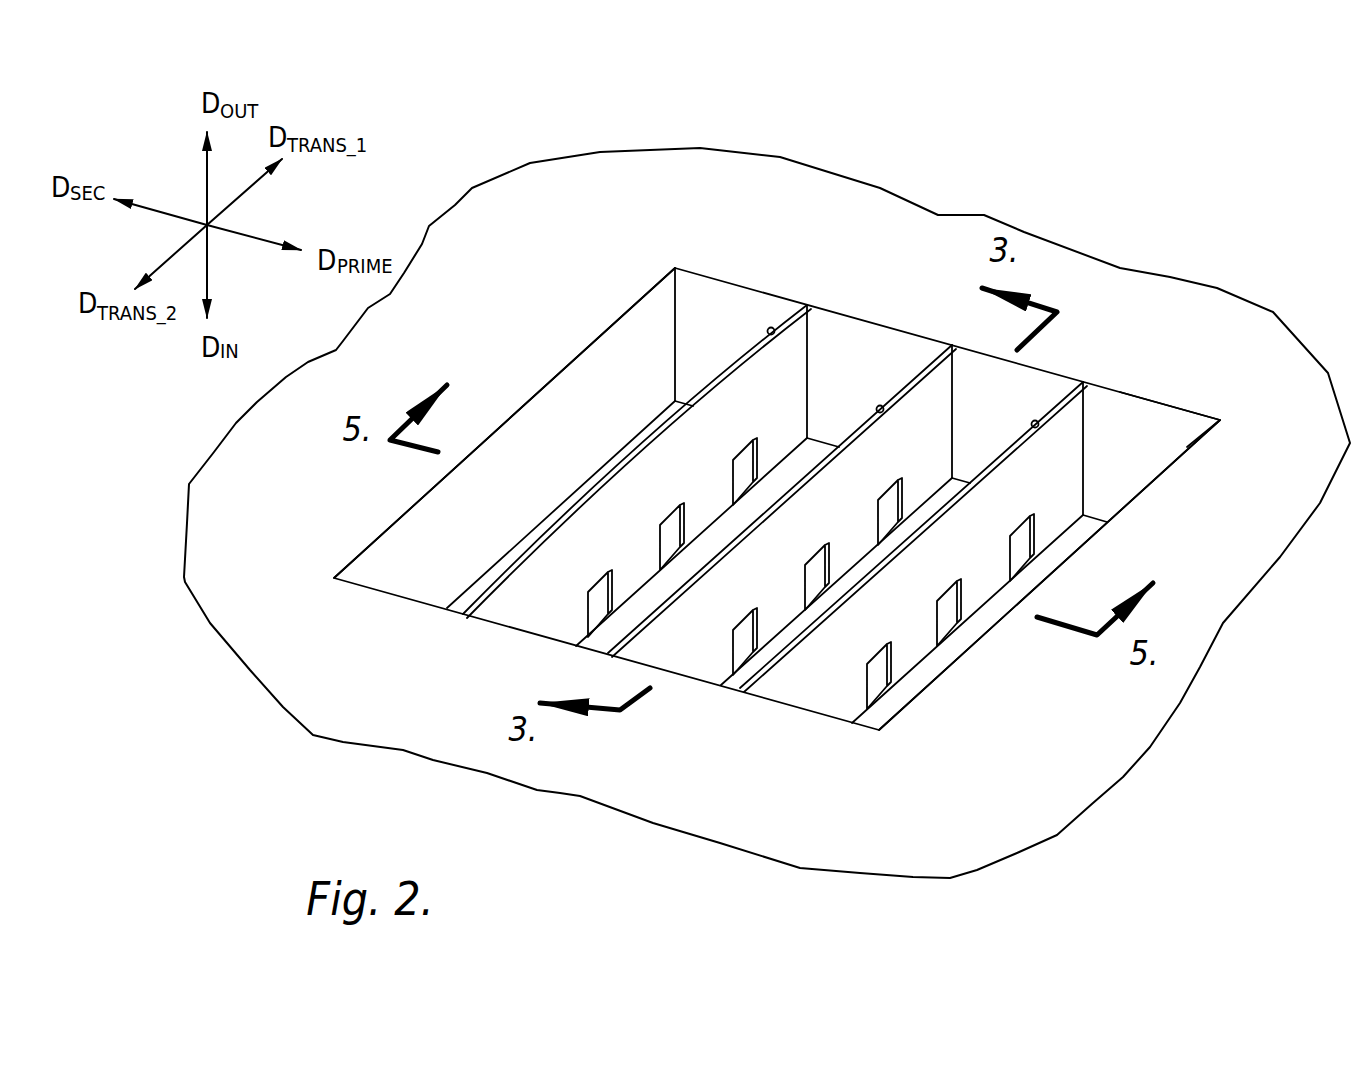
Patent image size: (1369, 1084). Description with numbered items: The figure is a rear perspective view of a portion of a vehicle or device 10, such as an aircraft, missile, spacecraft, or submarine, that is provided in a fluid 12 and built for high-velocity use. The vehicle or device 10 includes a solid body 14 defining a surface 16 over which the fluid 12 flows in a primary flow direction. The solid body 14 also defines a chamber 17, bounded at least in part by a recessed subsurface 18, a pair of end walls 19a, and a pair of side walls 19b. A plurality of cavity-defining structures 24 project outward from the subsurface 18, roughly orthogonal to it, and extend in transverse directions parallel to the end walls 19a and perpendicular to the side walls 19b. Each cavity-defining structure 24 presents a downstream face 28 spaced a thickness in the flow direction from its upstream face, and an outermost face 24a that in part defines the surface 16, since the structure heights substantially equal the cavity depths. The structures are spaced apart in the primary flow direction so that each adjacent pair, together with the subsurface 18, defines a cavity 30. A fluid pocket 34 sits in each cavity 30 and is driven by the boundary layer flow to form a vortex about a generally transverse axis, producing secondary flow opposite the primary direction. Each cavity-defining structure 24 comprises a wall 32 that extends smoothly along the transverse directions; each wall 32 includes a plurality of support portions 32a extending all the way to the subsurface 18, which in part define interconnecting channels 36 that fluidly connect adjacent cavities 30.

The vehicle or device 10 is at (1137, 180).
The fluid 12 is at (903, 117).
The solid body 14 is at (1192, 310).
The surface 16 is at (1203, 394).
The chamber 17 is at (688, 302).
The subsurface 18 is at (628, 610).
The end walls 19a is at (392, 563).
The side walls 19b is at (1157, 427).
The cavity-defining structures 24 is at (795, 328).
The outermost face 24a is at (768, 326).
The downstream face 28 is at (985, 503).
The cavity 30 is at (857, 383).
The wall 32 is at (793, 367).
The support portions 32a is at (935, 478).
The fluid pocket 34 is at (693, 555).
The interconnecting channel 36 is at (1028, 563).